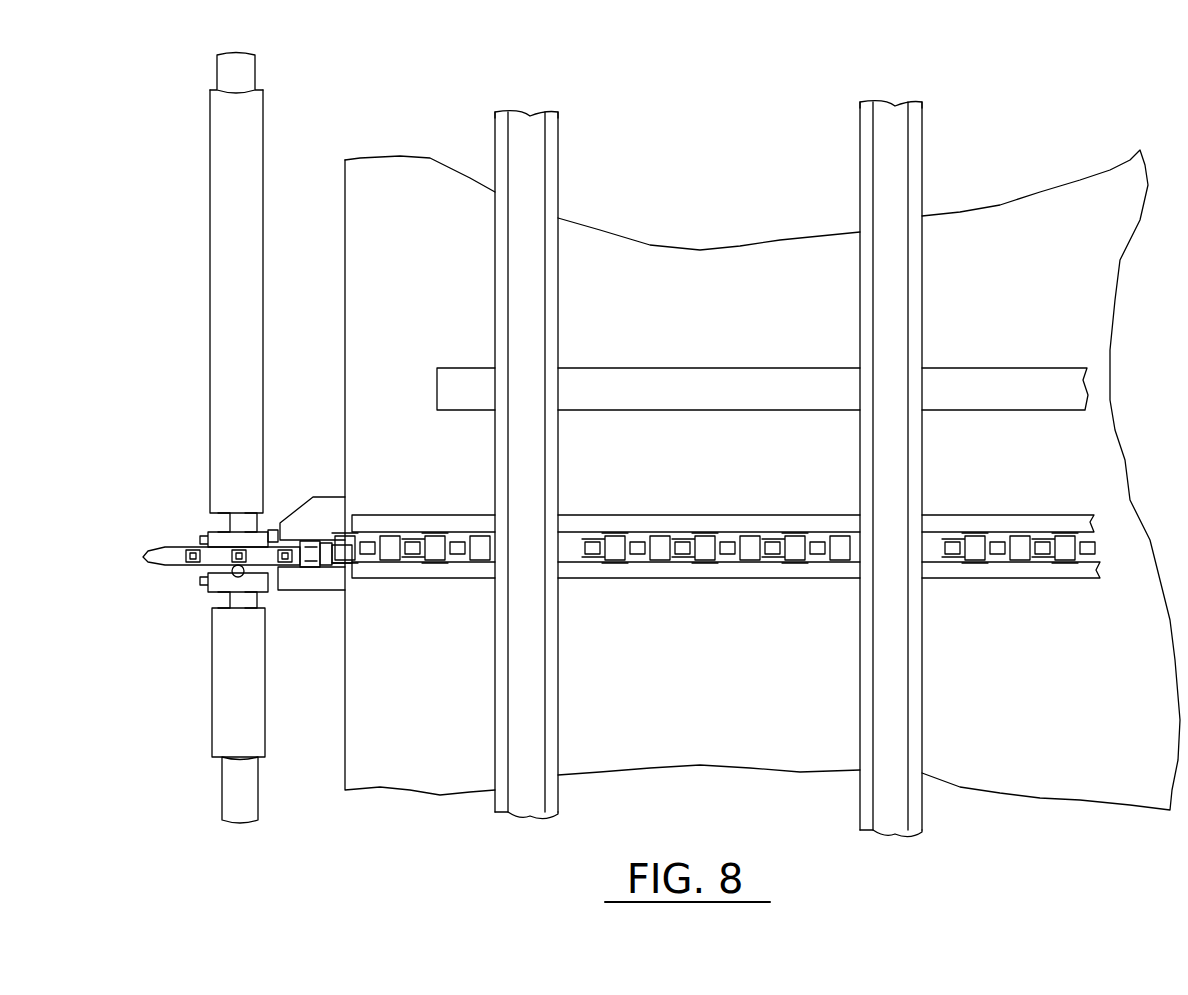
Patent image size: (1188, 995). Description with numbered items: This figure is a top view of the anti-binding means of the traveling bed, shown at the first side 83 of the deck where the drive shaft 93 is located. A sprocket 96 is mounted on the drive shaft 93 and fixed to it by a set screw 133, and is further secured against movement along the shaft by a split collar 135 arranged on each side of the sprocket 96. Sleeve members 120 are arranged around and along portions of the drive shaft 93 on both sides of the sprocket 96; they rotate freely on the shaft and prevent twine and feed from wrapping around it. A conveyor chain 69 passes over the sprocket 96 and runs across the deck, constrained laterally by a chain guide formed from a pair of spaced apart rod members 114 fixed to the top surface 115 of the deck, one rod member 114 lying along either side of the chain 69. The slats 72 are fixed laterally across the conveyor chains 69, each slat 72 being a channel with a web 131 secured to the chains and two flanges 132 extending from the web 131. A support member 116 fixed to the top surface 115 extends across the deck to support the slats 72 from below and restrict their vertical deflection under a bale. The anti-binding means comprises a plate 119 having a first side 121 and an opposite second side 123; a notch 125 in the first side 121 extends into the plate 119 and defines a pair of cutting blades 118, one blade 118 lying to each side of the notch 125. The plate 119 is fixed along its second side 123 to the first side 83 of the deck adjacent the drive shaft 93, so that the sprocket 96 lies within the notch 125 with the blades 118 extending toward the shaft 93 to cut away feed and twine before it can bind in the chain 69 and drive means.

The conveyor chain 69 is at (684, 505).
The slat 72 is at (714, 469).
The first side 83 is at (762, 448).
The drive shaft 93 is at (242, 77).
The sprocket 96 is at (175, 557).
The rod member 114 is at (792, 503).
The top surface 115 is at (678, 260).
The support member 116 is at (730, 382).
The cutting blade 118 is at (320, 502).
The plate 119 is at (318, 500).
The sleeve member 120 is at (255, 322).
The first side 121 is at (276, 528).
The second side 123 is at (326, 540).
The notch 125 is at (340, 546).
The web 131 is at (530, 292).
The flange 132 is at (500, 332).
The set screw 133 is at (248, 580).
The split collar 135 is at (250, 535).